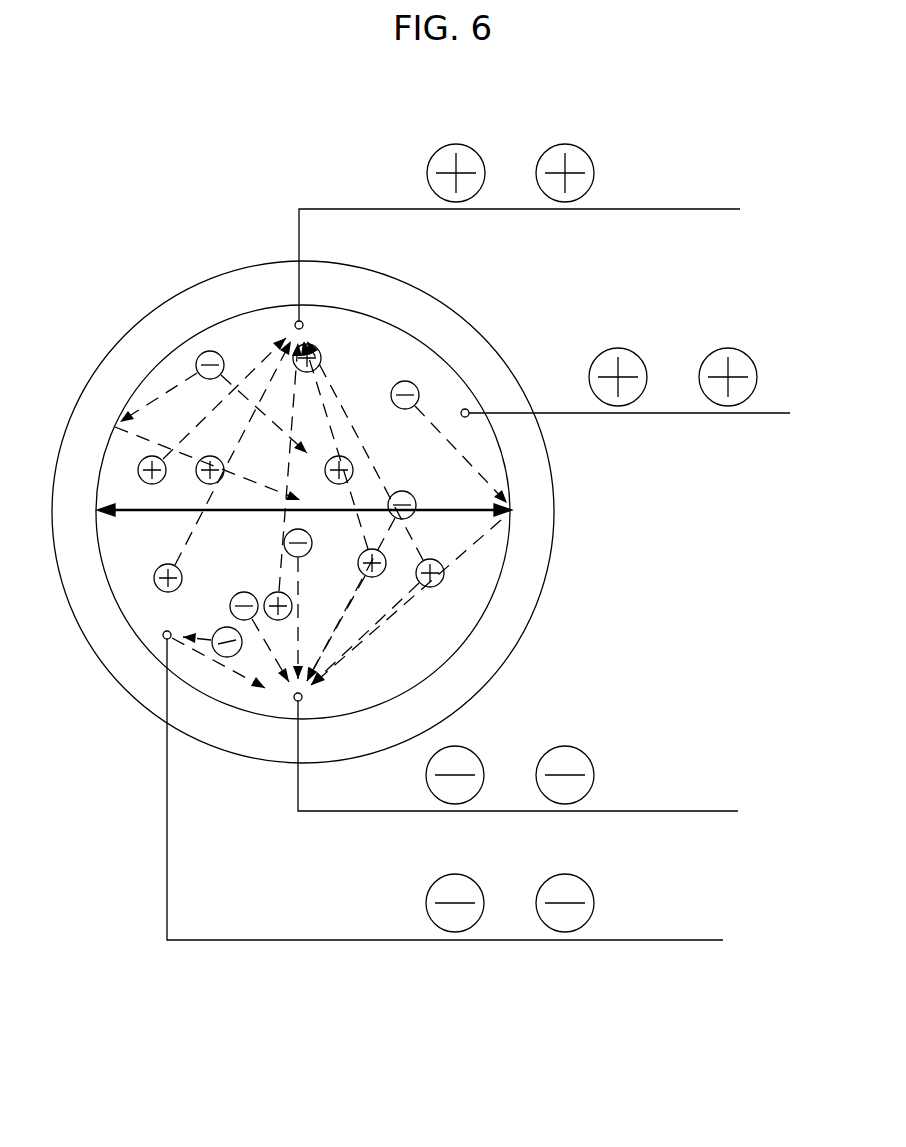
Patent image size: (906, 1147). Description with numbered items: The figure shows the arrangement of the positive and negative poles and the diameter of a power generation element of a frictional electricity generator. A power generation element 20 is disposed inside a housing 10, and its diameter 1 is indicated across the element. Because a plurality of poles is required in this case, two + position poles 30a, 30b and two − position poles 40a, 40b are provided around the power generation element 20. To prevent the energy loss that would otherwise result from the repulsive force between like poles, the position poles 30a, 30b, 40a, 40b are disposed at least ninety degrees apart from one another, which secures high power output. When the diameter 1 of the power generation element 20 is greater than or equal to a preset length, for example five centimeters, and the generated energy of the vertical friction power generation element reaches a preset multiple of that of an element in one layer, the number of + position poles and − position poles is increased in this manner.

The diameter 1 is at (455, 513).
The housing 10 is at (458, 311).
The power generation element 20 is at (494, 467).
The + position pole 30a is at (296, 321).
The + position pole 30b is at (467, 409).
The − position pole 40a is at (297, 702).
The − position pole 40b is at (163, 638).